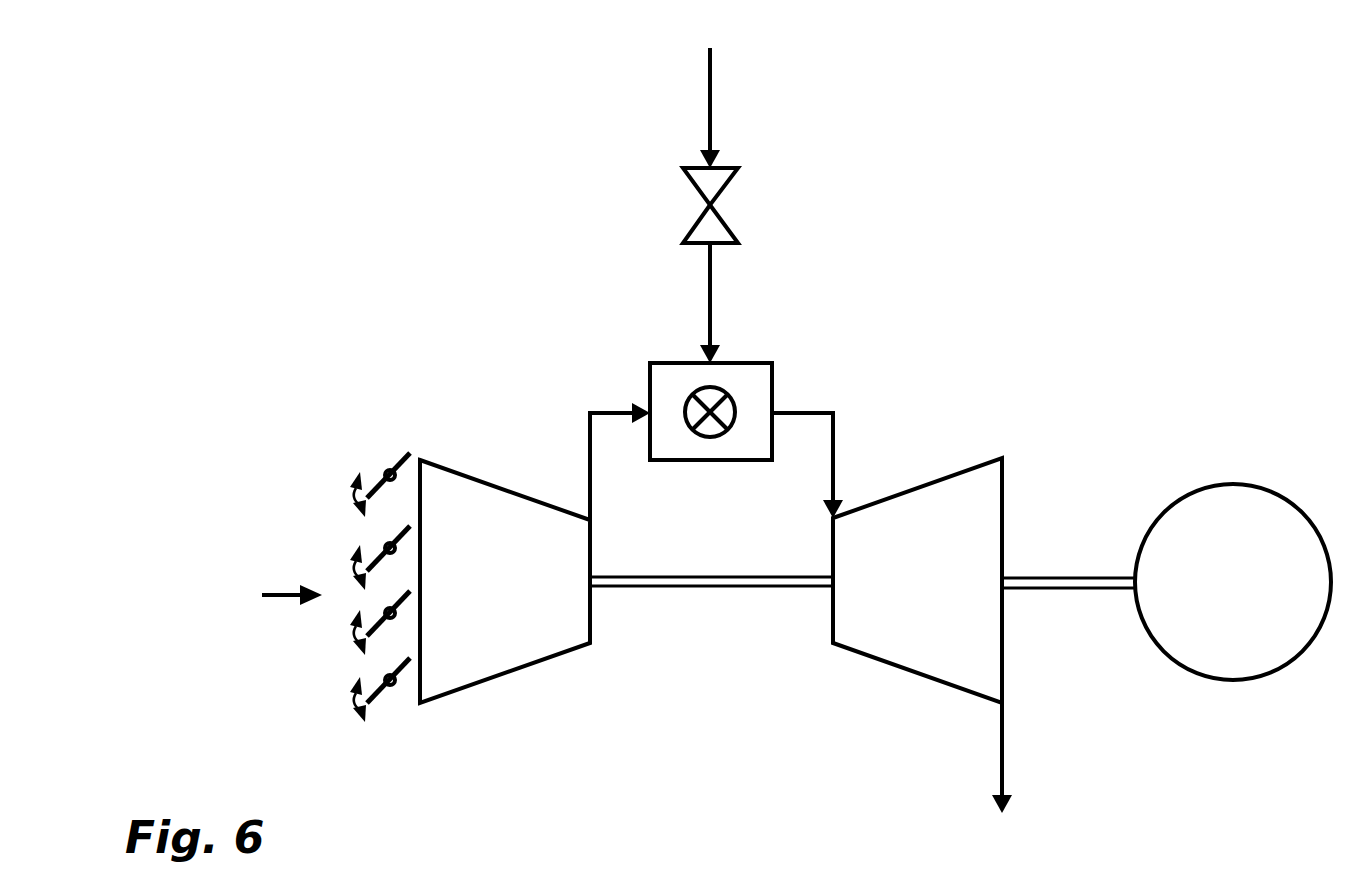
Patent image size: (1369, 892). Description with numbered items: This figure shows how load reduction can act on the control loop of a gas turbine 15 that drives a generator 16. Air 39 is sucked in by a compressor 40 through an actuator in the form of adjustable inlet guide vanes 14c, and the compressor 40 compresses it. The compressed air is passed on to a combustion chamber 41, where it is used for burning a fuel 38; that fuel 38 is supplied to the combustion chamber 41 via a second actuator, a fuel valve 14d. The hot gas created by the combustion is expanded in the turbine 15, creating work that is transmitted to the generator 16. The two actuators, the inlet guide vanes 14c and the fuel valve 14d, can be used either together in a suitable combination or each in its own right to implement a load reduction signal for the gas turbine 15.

The fuel 38 is at (686, 108).
The fuel valve 14d is at (743, 265).
The combustion chamber 41 is at (716, 441).
The compressor 40 is at (626, 581).
The air 39 is at (292, 570).
The adjustable inlet guide vanes 14c is at (392, 738).
The gas turbine 15 is at (984, 635).
The generator 16 is at (1233, 582).